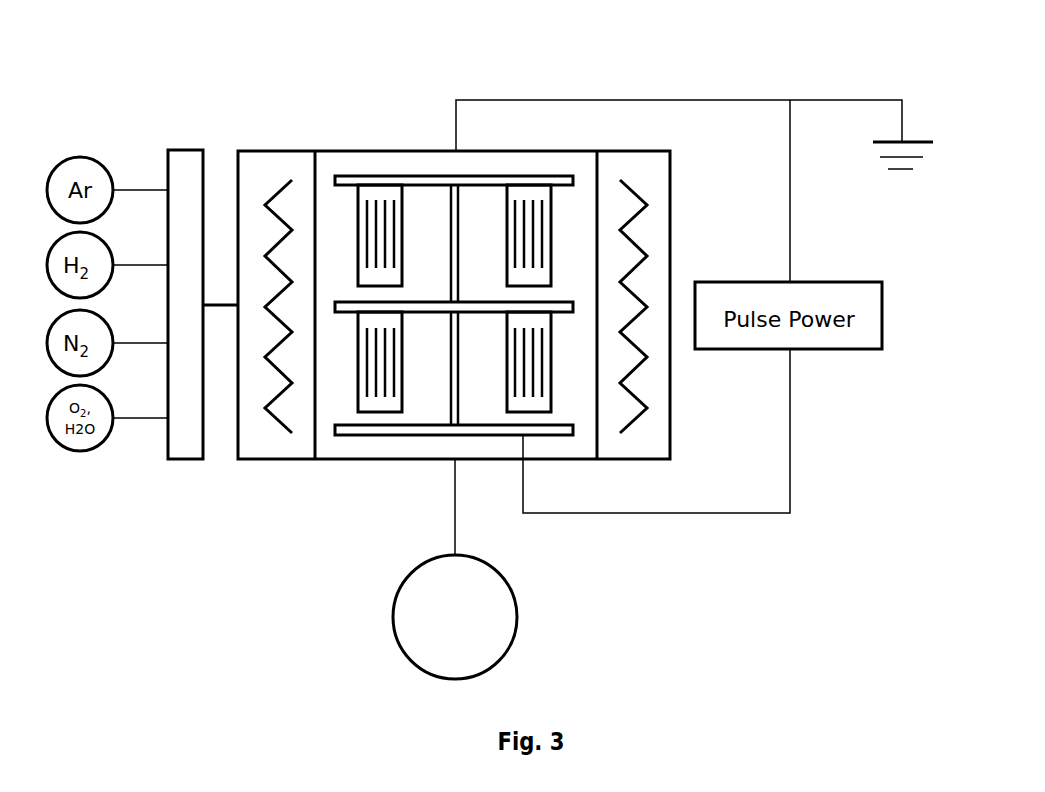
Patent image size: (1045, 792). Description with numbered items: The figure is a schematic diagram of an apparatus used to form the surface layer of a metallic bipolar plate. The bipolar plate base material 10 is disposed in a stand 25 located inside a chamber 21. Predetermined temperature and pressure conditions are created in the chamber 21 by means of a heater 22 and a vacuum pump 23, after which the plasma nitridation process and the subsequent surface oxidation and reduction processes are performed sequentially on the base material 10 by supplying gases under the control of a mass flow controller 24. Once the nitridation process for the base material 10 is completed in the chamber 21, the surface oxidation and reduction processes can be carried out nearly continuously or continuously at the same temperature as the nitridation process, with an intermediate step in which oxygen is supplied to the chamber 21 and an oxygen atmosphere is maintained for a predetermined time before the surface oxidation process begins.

The bipolar plate base material 10 is at (358, 227).
The chamber 21 is at (360, 459).
The heater 22 is at (275, 420).
The vacuum pump 23 is at (518, 607).
The mass flow controller (MFC) 24 is at (187, 459).
The stand 25 is at (419, 176).